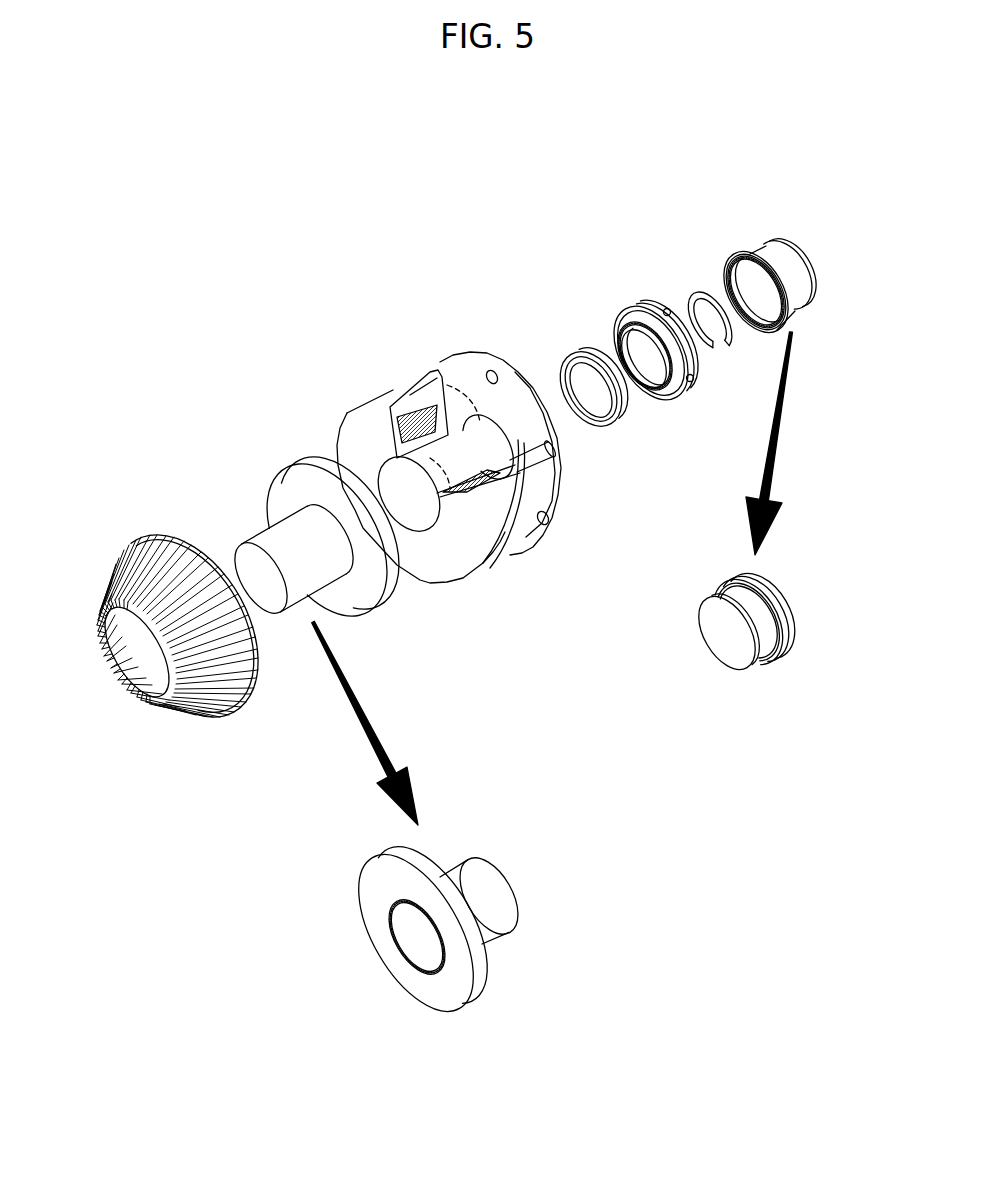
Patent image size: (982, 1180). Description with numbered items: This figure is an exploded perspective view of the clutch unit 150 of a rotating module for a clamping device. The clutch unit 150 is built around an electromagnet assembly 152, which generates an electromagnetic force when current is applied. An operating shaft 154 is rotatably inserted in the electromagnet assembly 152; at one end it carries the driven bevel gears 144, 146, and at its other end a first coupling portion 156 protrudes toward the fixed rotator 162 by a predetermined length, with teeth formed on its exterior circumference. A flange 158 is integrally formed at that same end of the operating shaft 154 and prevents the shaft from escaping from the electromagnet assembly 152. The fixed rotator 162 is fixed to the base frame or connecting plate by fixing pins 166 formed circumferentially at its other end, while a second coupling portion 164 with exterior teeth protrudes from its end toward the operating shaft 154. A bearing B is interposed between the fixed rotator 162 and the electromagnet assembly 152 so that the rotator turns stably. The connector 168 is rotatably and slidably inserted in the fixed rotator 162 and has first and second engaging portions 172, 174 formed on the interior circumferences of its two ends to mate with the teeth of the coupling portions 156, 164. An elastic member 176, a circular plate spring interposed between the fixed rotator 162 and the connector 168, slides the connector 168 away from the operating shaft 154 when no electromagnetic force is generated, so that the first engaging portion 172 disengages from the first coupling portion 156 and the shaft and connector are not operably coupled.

The driven bevel gear 144 is at (165, 561).
The driven bevel gear 146 is at (118, 520).
The clutch unit 150 is at (449, 357).
The electromagnet assembly 152 is at (402, 368).
The operating shaft 154 is at (263, 540).
The first coupling portion 156 is at (387, 933).
The flange 158 is at (360, 590).
The fixed rotator 162 is at (675, 356).
The second coupling portion 164 is at (651, 356).
The fixing pin 166 is at (665, 310).
The connector 168 is at (732, 449).
The first engaging portion 172 is at (746, 300).
The second engaging portion 174 is at (717, 670).
The elastic member 176 is at (704, 300).
The bearing B is at (588, 348).